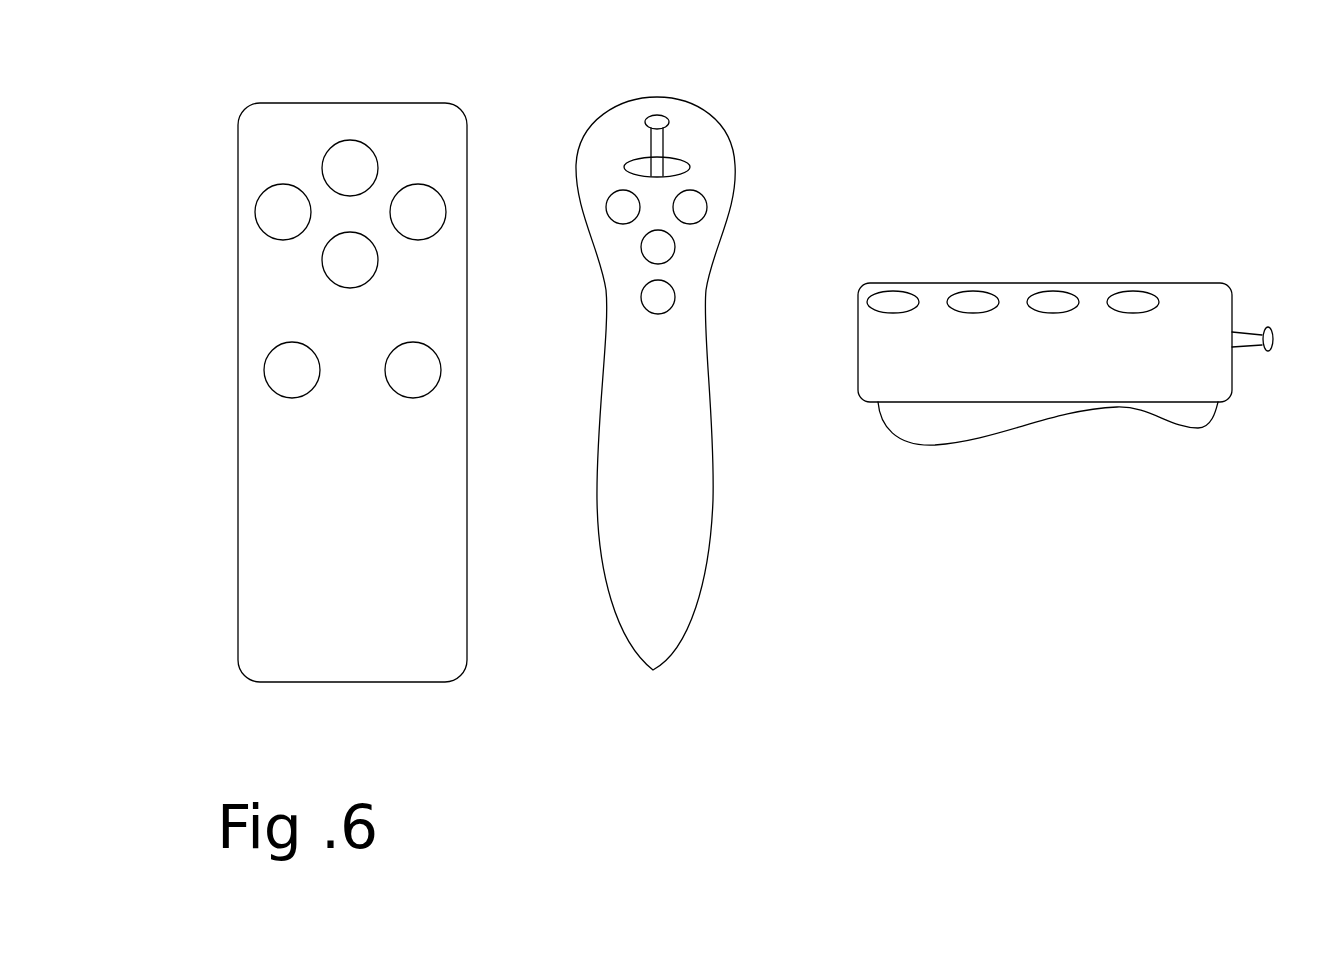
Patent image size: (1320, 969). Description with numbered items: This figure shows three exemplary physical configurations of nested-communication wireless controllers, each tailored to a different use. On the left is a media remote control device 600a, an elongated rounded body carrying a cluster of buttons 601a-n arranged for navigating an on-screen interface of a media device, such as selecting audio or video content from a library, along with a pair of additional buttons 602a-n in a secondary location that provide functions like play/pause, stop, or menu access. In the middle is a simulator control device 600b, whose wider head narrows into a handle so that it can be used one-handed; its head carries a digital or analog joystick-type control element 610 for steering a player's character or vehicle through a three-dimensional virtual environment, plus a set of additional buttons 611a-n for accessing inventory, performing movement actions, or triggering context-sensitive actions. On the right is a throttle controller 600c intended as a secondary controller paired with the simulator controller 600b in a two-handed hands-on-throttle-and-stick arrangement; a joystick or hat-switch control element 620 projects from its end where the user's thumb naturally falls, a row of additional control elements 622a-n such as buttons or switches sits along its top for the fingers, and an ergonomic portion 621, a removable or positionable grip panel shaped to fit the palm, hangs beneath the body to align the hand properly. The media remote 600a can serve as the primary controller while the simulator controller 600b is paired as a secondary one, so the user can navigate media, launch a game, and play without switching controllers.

The media remote control device 600a is at (466, 672).
The buttons 601a-n is at (332, 233).
The additional buttons 602a-n is at (400, 393).
The simulator control device 600b is at (706, 600).
The joystick-type control element 610 is at (670, 123).
The additional buttons 611a-n is at (675, 293).
The throttle controller 600c is at (1232, 403).
The joystick or hat-switch control element 620 is at (1268, 327).
The ergonomic portion 621 is at (1003, 430).
The additional control elements 622a-n is at (1125, 290).